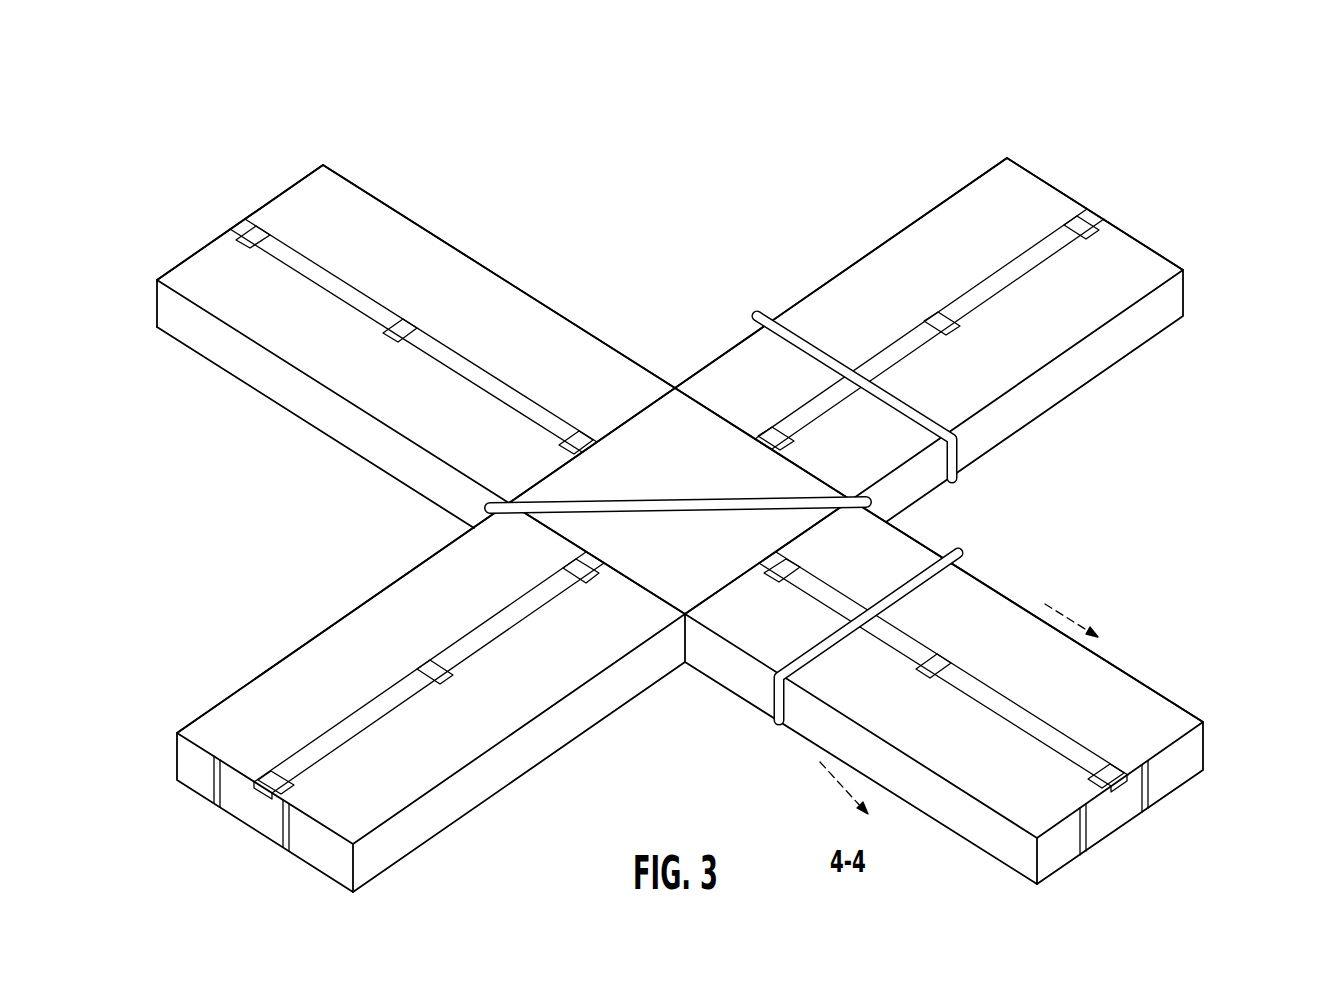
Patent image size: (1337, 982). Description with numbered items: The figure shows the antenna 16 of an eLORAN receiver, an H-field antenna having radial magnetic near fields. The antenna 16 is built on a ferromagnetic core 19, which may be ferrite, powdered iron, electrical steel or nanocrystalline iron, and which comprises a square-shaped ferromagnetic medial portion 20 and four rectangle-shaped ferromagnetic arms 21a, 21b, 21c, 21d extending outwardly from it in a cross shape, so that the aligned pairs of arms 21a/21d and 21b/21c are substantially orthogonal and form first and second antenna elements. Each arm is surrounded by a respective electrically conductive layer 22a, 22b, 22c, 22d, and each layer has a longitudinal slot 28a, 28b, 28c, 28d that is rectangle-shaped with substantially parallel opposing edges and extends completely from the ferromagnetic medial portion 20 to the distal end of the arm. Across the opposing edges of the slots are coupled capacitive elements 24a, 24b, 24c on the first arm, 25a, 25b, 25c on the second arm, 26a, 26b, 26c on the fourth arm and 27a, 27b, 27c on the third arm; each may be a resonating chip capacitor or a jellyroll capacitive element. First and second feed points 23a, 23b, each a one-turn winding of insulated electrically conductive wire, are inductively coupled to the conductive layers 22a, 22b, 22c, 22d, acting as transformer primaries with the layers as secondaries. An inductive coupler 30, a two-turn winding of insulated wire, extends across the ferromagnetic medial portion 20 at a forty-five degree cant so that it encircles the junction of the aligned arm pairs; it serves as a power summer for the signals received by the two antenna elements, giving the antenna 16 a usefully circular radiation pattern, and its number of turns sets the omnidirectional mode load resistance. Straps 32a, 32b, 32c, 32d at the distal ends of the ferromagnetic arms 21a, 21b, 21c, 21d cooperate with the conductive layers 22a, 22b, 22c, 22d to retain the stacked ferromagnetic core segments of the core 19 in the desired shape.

The antenna 16 is at (724, 488).
The ferromagnetic core 19 is at (724, 539).
The ferromagnetic medial portion 20 is at (682, 573).
The ferromagnetic arm 21a is at (416, 335).
The ferromagnetic arm 21b is at (966, 325).
The ferromagnetic arm 21c is at (429, 726).
The ferromagnetic arm 21d is at (988, 701).
The electrically conductive layer 22a is at (432, 271).
The electrically conductive layer 22b is at (1143, 270).
The electrically conductive layer 22c is at (297, 687).
The electrically conductive layer 22d is at (1087, 660).
The first feed point 23a is at (938, 428).
The second feed point 23b is at (960, 557).
The capacitive element 24a is at (240, 232).
The capacitive element 24b is at (403, 325).
The capacitive element 24c is at (583, 433).
The capacitive element 25a is at (1083, 230).
The capacitive element 25b is at (938, 313).
The capacitive element 25c is at (772, 432).
The capacitive element 26a is at (1118, 787).
The capacitive element 26b is at (948, 660).
The capacitive element 26c is at (776, 563).
The capacitive element 27a is at (292, 789).
The capacitive element 27b is at (435, 678).
The capacitive element 27c is at (593, 567).
The slot 28a is at (352, 303).
The slot 28b is at (1005, 287).
The slot 28c is at (490, 633).
The slot 28d is at (1023, 727).
The inductive coupler 30 is at (690, 500).
The strap 32a is at (222, 800).
The strap 32b is at (289, 850).
The strap 32c is at (1084, 853).
The strap 32d is at (1148, 800).